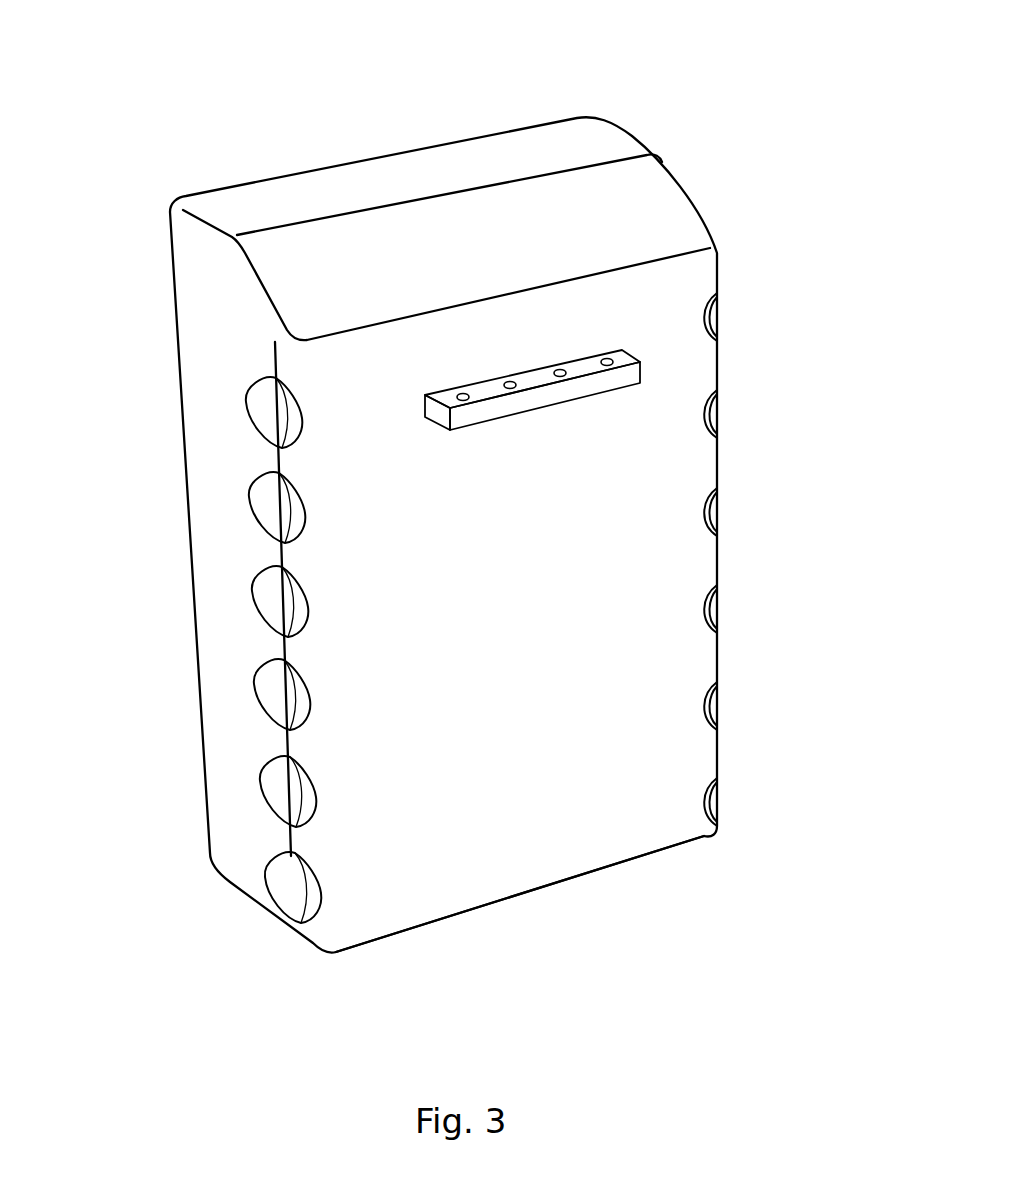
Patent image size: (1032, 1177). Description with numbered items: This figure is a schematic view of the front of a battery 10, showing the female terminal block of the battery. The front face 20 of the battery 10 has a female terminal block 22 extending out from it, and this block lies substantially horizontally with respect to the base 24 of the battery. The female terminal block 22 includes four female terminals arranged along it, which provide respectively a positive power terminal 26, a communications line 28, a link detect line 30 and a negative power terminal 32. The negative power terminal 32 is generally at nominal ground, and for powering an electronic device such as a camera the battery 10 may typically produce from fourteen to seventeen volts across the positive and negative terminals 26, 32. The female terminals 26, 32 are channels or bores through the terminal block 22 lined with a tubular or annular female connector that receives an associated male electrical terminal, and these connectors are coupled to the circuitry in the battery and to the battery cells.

The battery 10 is at (750, 115).
The front face 20 is at (370, 662).
The female terminal block 22 is at (628, 373).
The base 24 is at (398, 933).
The positive power terminal 26 is at (400, 407).
The communications line 28 is at (502, 382).
The link detect line 30 is at (553, 368).
The negative power terminal 32 is at (625, 350).